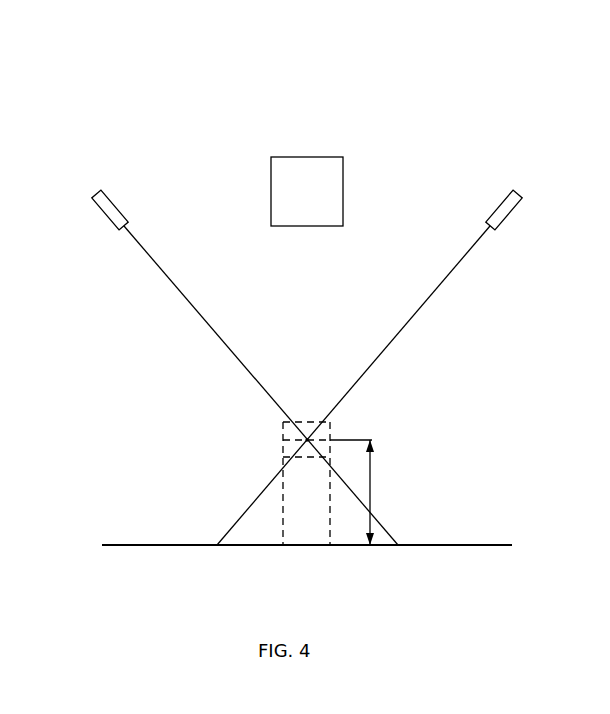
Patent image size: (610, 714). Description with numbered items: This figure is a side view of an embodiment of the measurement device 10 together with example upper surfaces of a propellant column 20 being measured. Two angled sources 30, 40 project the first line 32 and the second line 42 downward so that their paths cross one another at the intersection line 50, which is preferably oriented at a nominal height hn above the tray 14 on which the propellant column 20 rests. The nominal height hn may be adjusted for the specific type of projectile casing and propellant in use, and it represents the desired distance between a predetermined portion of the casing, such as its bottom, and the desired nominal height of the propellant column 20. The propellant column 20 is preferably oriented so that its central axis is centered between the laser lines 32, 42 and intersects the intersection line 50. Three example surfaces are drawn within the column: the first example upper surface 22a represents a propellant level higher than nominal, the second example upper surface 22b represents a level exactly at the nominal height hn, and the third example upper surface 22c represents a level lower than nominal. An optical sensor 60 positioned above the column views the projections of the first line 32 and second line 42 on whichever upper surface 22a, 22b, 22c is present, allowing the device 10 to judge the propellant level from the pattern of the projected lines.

The measurement device 10 is at (156, 89).
The tray 14 is at (123, 544).
The propellant column 20 is at (282, 523).
The first example upper surface 22a is at (244, 403).
The second example upper surface 22b is at (240, 428).
The third example upper surface 22c is at (244, 475).
The first laser 30 is at (120, 216).
The first line 32 is at (225, 385).
The second laser 40 is at (490, 216).
The second line 42 is at (385, 385).
The intersection line 50 is at (308, 436).
The optical sensor 60 is at (302, 157).
The nominal height hn is at (370, 485).